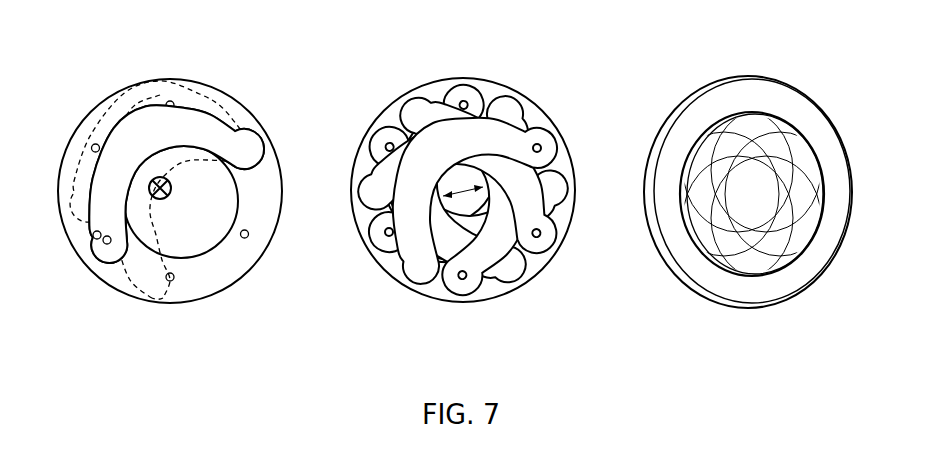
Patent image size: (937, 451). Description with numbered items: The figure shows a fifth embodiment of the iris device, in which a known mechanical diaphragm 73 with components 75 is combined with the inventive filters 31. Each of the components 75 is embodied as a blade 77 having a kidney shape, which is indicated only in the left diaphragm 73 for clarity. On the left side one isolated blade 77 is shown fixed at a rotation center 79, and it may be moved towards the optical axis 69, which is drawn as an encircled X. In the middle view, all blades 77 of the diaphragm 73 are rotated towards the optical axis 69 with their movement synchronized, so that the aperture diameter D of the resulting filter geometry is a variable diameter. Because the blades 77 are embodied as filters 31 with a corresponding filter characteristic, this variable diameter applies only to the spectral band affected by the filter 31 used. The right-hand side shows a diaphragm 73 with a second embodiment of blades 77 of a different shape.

The mechanical diaphragm 73 is at (210, 78).
The components 75 is at (110, 147).
The blade 77 is at (730, 132).
The rotation center 79 is at (243, 148).
The optical axis 69 is at (172, 193).
The filter 31 is at (335, 201).
The aperture diameter D is at (462, 192).